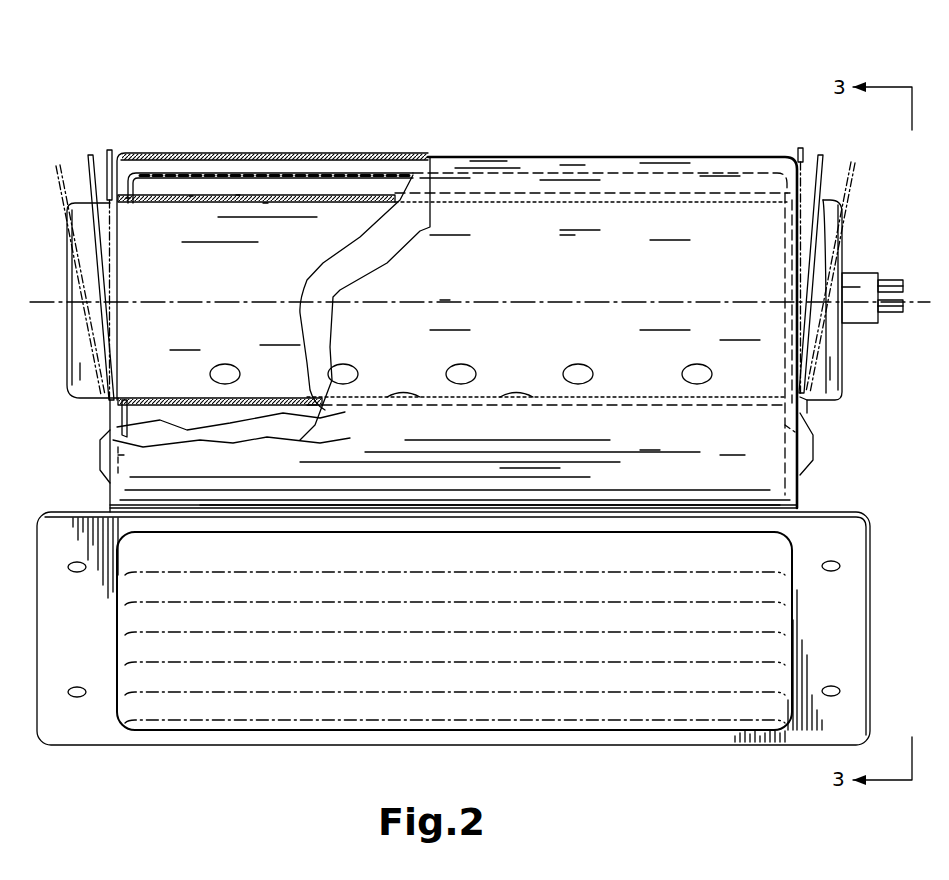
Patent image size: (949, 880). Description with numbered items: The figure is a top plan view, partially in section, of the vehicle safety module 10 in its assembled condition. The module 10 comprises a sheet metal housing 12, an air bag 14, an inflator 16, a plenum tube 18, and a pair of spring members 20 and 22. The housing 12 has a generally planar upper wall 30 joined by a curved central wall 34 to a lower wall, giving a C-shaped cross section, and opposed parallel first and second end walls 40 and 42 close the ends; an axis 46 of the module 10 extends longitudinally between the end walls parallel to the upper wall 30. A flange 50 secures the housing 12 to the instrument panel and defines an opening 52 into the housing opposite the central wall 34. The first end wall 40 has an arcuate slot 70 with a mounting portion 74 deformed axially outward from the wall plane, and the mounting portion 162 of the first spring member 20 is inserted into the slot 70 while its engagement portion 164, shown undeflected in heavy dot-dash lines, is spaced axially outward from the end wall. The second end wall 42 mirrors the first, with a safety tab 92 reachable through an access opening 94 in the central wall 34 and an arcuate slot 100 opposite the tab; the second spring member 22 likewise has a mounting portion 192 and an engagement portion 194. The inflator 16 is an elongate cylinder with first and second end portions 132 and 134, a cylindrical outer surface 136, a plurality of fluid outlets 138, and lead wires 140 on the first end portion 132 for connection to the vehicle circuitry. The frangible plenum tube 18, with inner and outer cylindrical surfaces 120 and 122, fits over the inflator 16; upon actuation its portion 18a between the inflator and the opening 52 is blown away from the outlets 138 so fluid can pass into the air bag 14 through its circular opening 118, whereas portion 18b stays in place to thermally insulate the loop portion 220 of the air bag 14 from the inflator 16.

The module 10 is at (586, 138).
The housing 12 is at (764, 748).
The air bag 14 is at (507, 700).
The inflator 16 is at (253, 290).
The plenum tube 18 is at (286, 186).
The portion of the plenum tube 18a is at (232, 405).
The portion of the plenum tube 18b is at (323, 193).
The first spring member 20 is at (821, 146).
The second spring member 22 is at (86, 138).
The upper wall 30 is at (668, 473).
The central wall 34 is at (410, 155).
The first end wall 40 is at (806, 497).
The second end wall 42 is at (93, 460).
The axis 46 is at (450, 300).
The flange 50 is at (222, 748).
The opening 52 is at (117, 697).
The slot 70 is at (790, 430).
The mounting portion 74 is at (813, 448).
The safety tab 92 is at (103, 176).
The access opening 94 is at (140, 155).
The arcuate slot 100 is at (123, 447).
The circular opening 118 is at (127, 200).
The inner cylindrical surface 120 is at (265, 205).
The outer cylindrical surface 122 is at (237, 197).
The first axial end portion 132 is at (856, 213).
The second axial end portion 134 is at (60, 323).
The cylindrical outer surface 136 is at (190, 197).
The fluid outlets 138 is at (226, 365).
The lead wires 140 is at (893, 287).
The mounting portion 162 is at (807, 408).
The engagement portion 164 is at (825, 160).
The mounting portion 192 is at (110, 413).
The engagement portion 194 is at (85, 170).
The loop portion 220 is at (357, 173).